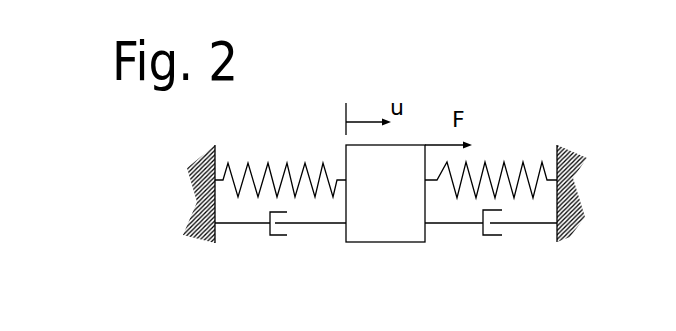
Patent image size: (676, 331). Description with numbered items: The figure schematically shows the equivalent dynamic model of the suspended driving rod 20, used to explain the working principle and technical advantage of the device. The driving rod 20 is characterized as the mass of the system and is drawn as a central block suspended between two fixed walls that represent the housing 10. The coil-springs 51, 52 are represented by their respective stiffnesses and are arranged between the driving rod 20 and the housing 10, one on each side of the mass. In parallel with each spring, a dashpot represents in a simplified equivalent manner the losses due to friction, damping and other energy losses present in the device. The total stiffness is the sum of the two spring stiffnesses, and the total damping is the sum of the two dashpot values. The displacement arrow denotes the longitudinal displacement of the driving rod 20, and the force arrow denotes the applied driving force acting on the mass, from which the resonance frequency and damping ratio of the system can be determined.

The housing 10 is at (578, 151).
The driving rod 20 is at (408, 158).
The coil-spring 51 is at (457, 190).
The coil-spring 52 is at (313, 190).